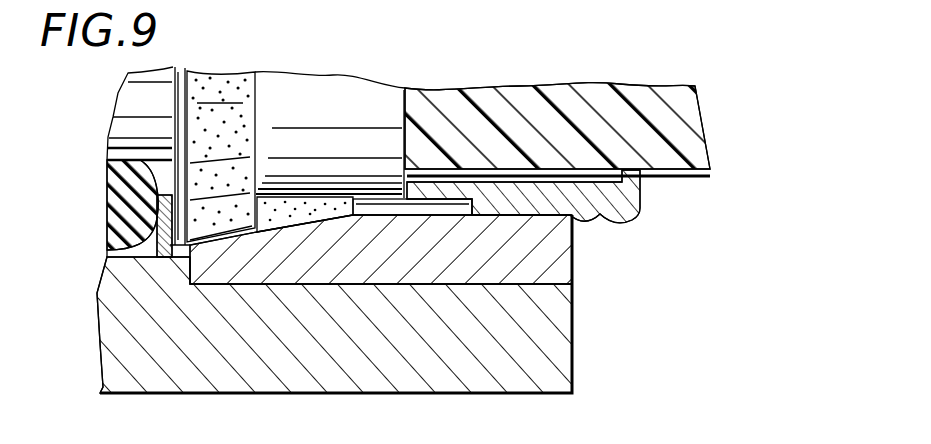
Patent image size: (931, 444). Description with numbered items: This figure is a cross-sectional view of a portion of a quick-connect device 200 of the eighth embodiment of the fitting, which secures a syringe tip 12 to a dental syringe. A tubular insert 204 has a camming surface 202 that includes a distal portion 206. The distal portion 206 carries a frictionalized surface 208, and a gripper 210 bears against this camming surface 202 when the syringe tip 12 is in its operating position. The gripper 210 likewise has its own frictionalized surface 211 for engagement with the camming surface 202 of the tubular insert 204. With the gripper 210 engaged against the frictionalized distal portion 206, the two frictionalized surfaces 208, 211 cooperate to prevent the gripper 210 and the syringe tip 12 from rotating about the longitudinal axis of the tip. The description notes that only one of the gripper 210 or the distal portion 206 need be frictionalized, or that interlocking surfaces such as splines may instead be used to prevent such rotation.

The syringe tip 12 is at (682, 142).
The quick-connect device 200 is at (405, 327).
The camming surface 202 is at (259, 198).
The tubular insert 204 is at (550, 272).
The distal portion 206 is at (376, 396).
The frictionalized surface 208 is at (328, 212).
The gripper 210 is at (340, 97).
The frictionalized surface 211 is at (234, 90).